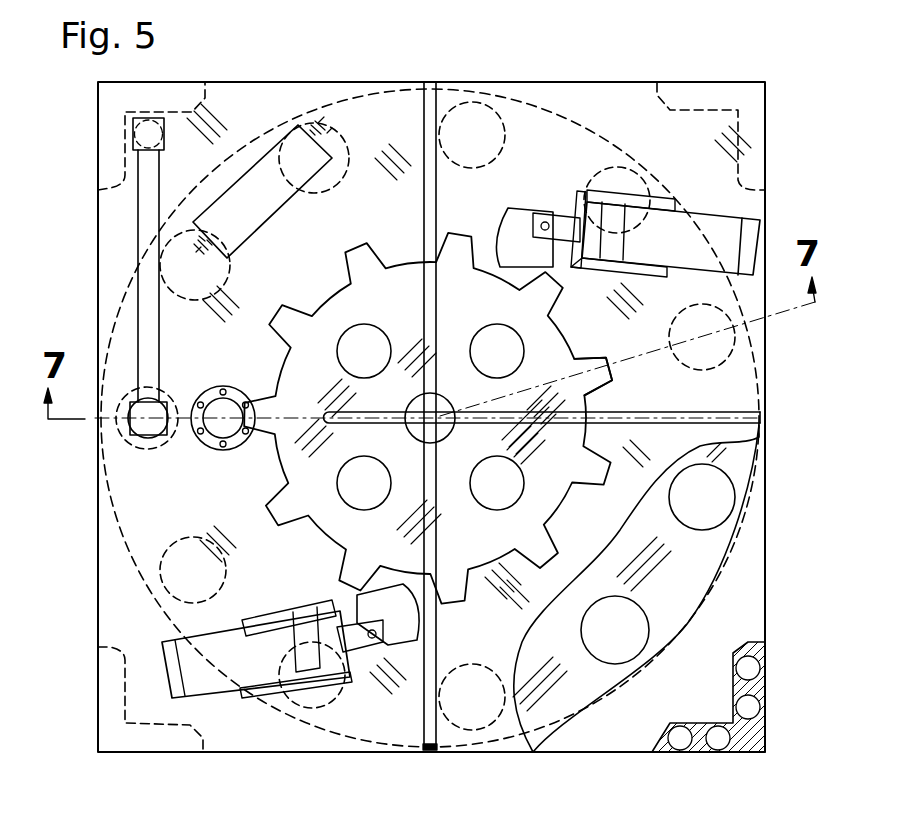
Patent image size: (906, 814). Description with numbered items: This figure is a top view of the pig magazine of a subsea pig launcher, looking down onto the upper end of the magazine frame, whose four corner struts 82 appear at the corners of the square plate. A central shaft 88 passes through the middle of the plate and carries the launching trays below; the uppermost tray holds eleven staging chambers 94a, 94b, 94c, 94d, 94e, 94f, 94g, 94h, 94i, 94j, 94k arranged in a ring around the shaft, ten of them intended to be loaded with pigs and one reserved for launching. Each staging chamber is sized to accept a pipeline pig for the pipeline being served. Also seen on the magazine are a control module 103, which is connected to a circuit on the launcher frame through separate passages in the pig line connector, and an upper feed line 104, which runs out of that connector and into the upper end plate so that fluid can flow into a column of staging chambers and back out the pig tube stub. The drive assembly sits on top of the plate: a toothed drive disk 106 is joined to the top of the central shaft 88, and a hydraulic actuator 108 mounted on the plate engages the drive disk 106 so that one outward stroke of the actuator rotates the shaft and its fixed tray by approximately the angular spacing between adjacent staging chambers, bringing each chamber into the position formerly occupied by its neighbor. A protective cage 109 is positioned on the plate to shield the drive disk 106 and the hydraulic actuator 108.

The corner strut 82 is at (112, 683).
The central shaft 88 is at (420, 432).
The staging chamber 94a is at (172, 291).
The staging chamber 94b is at (345, 138).
The staging chamber 94c is at (478, 102).
The staging chamber 94d is at (612, 167).
The staging chamber 94e is at (737, 348).
The staging chamber 94f is at (736, 490).
The staging chamber 94g is at (643, 612).
The staging chamber 94h is at (473, 731).
The staging chamber 94i is at (317, 710).
The staging chamber 94j is at (150, 562).
The staging chamber 94k is at (142, 452).
The control module 103 is at (258, 153).
The upper feed line 104 is at (148, 314).
The toothed drive disk 106 is at (617, 377).
The hydraulic actuator 108 is at (760, 228).
The protective cage 109 is at (750, 417).